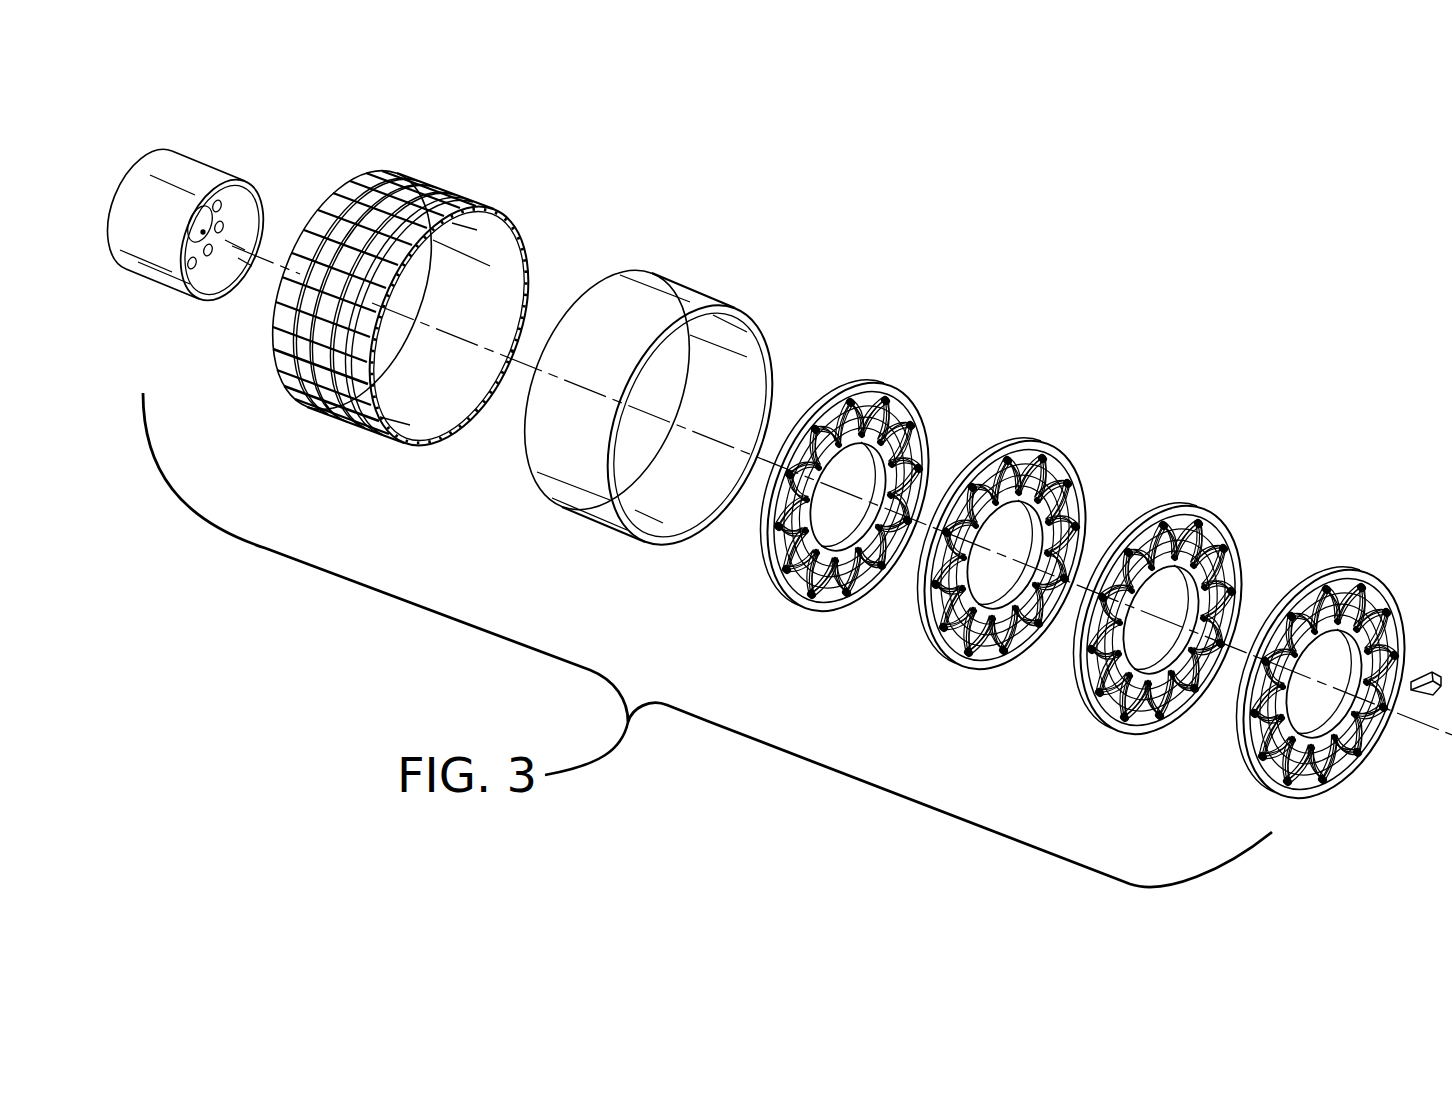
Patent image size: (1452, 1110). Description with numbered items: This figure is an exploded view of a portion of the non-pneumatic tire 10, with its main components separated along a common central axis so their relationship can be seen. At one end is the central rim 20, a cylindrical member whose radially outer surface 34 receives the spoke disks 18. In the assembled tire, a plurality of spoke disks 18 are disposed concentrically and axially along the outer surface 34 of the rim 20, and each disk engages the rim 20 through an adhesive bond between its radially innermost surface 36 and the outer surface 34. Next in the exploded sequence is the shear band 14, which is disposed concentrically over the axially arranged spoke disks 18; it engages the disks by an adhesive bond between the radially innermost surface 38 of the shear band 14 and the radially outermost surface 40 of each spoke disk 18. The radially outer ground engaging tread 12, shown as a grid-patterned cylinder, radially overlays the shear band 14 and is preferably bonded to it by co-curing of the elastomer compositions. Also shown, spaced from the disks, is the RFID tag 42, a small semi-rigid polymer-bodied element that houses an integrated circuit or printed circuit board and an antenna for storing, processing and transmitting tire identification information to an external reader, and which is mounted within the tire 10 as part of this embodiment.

The non-pneumatic tire 10 is at (558, 89).
The tread 12 is at (413, 183).
The shear band 14 is at (665, 285).
The spoke disks 18 is at (788, 600).
The central rim 20 is at (245, 180).
The outer surface of the rim 34 is at (192, 177).
The radially innermost surface of spoke disk 36 is at (882, 578).
The radially innermost surface of the shear band 38 is at (688, 508).
The radially outermost surface of spoke disk 40 is at (828, 408).
The RFID tag 42 is at (1431, 650).